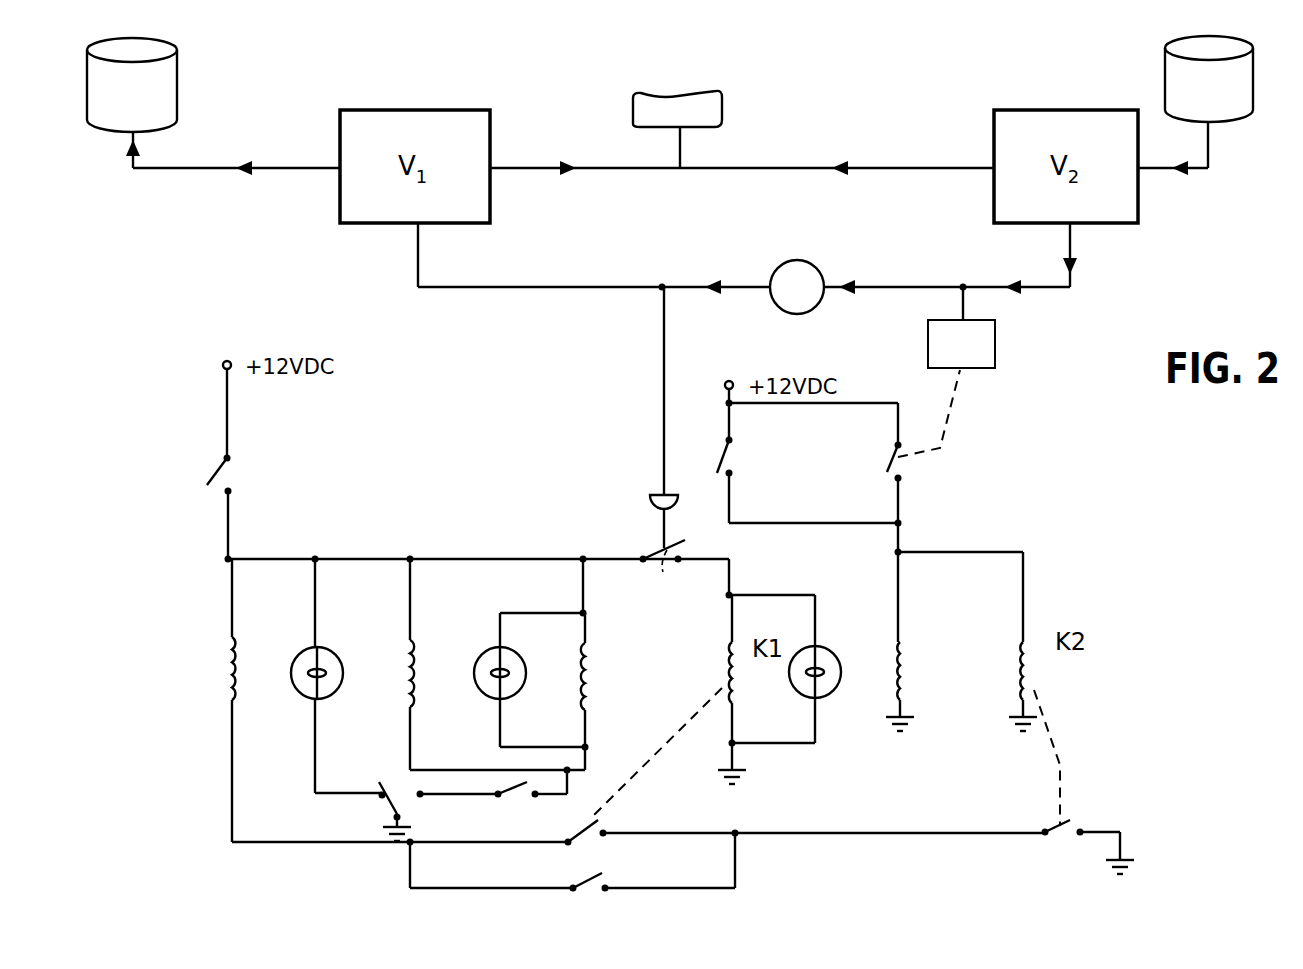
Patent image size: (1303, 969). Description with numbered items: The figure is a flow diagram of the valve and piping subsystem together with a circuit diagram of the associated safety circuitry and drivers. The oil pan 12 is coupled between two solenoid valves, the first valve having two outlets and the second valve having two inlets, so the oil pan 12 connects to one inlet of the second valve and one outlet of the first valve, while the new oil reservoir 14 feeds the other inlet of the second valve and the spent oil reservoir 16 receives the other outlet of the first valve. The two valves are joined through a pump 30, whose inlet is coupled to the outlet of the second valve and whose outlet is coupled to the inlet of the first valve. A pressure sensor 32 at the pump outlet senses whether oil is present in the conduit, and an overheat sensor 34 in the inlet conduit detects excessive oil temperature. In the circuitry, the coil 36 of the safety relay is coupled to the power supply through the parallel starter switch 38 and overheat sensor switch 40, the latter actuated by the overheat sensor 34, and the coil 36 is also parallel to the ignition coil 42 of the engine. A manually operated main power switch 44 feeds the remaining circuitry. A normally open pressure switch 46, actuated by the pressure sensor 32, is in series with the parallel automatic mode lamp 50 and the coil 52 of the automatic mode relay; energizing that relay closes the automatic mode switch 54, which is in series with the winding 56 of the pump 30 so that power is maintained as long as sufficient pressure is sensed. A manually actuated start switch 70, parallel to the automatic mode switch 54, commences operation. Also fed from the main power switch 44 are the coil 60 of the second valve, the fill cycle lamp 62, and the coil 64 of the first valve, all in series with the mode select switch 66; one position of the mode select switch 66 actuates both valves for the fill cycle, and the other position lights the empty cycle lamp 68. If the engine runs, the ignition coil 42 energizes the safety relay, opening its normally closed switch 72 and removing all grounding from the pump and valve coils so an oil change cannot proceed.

The oil pan 12 is at (716, 112).
The new oil reservoir 14 is at (1240, 96).
The spent oil reservoir 16 is at (170, 106).
The pump 30 is at (815, 268).
The pressure sensor 32 is at (660, 530).
The overheat sensor 34 is at (995, 338).
The coil of safety relay K2 36 is at (1035, 676).
The starter switch 38 is at (735, 460).
The overheat sensor switch 40 is at (905, 466).
The ignition coil 42 is at (910, 670).
The main power switch 44 is at (220, 474).
The pressure switch 46 is at (663, 570).
The automatic mode lamp 50 is at (838, 678).
The coil of automatic mode relay K1 52 is at (726, 662).
The automatic mode switch 54 is at (598, 830).
The winding of the pump 56 is at (222, 650).
The coil of solenoid valve V2 60 is at (592, 651).
The fill cycle lamp 62 is at (520, 657).
The coil of solenoid valve V1 64 is at (418, 646).
The mode select switch 66 is at (402, 798).
The empty cycle lamp 68 is at (336, 655).
The start switch 70 is at (603, 882).
The normally closed switch 72 is at (1072, 822).